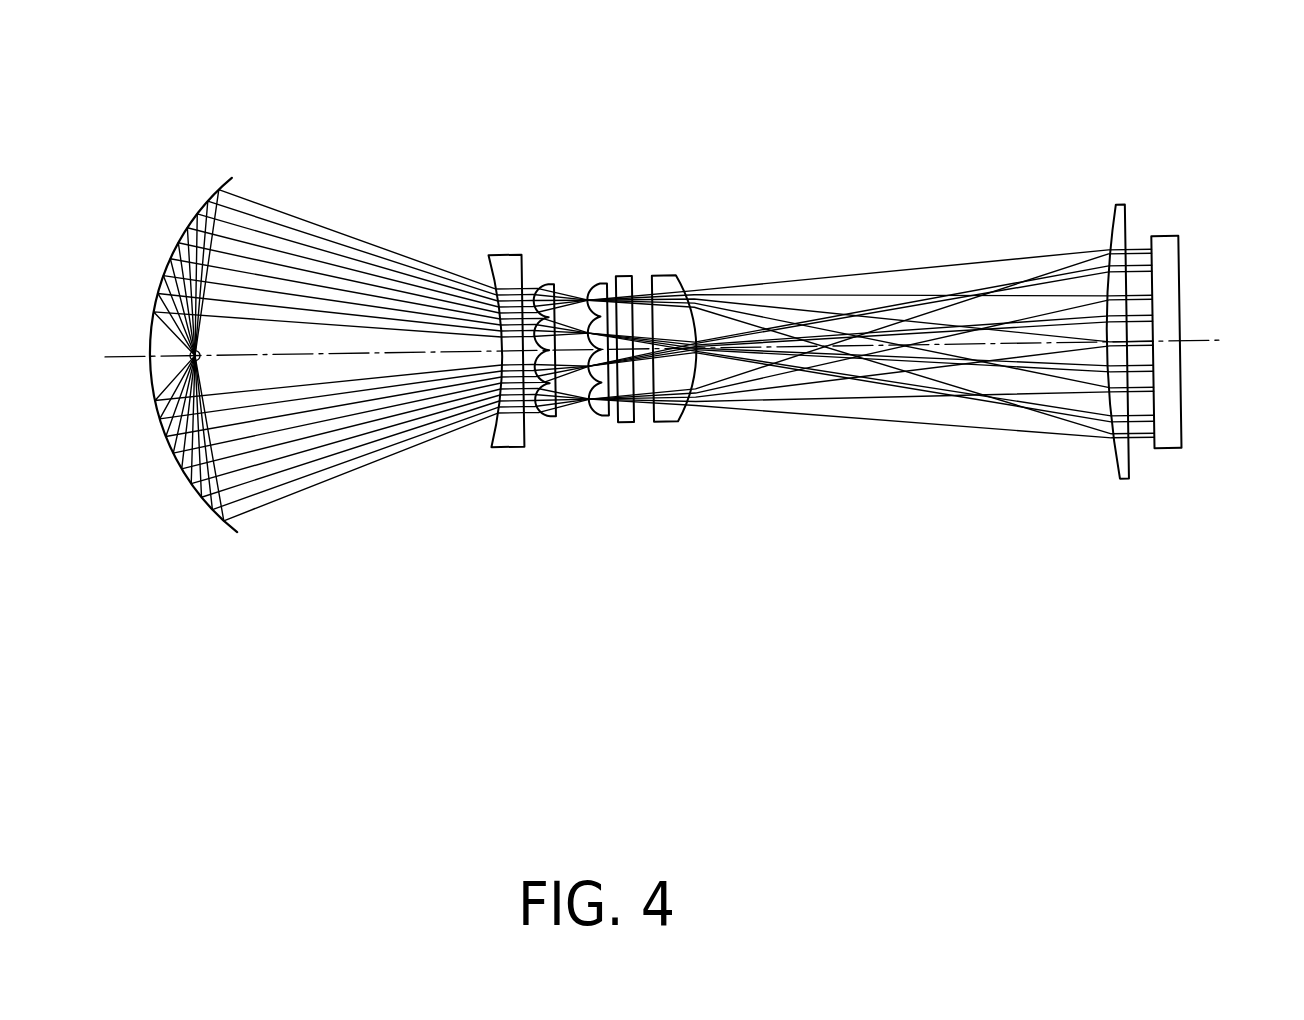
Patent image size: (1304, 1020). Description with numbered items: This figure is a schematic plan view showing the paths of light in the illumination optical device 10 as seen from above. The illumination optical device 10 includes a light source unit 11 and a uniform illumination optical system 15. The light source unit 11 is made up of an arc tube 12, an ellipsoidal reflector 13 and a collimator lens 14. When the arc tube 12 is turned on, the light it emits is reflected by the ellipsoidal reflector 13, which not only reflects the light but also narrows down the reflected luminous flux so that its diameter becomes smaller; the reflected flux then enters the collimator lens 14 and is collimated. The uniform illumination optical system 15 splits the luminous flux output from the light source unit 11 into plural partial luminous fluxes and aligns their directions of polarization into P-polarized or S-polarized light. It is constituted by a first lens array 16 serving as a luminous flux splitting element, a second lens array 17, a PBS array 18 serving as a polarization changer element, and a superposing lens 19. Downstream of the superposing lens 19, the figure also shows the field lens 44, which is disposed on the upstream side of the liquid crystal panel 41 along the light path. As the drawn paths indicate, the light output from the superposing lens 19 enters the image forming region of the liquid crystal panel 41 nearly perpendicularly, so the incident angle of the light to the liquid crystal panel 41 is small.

The illumination optical device 10 is at (501, 150).
The light source unit 11 is at (467, 650).
The arc tube 12 is at (201, 351).
The ellipsoidal reflector 13 is at (206, 503).
The collimator lens 14 is at (507, 447).
The uniform illumination optical system 15 is at (527, 543).
The first lens array 16 is at (553, 420).
The second lens array 17 is at (608, 420).
The PBS array 18 is at (623, 420).
The superposing lens 19 is at (663, 420).
The liquid crystal panel 41 is at (1181, 247).
The field lens 44 is at (1122, 480).